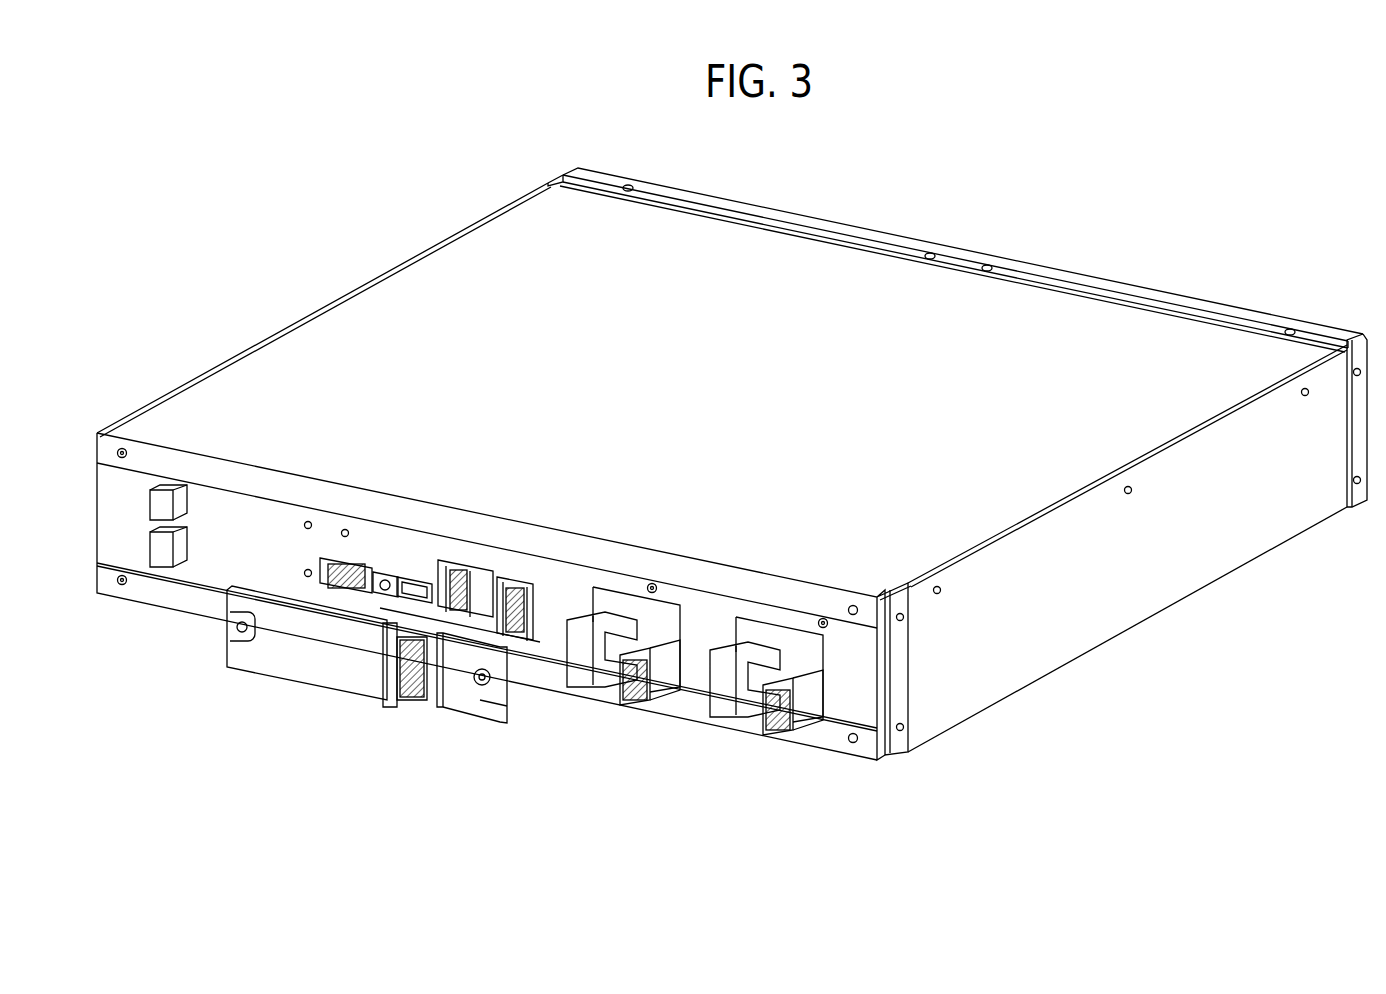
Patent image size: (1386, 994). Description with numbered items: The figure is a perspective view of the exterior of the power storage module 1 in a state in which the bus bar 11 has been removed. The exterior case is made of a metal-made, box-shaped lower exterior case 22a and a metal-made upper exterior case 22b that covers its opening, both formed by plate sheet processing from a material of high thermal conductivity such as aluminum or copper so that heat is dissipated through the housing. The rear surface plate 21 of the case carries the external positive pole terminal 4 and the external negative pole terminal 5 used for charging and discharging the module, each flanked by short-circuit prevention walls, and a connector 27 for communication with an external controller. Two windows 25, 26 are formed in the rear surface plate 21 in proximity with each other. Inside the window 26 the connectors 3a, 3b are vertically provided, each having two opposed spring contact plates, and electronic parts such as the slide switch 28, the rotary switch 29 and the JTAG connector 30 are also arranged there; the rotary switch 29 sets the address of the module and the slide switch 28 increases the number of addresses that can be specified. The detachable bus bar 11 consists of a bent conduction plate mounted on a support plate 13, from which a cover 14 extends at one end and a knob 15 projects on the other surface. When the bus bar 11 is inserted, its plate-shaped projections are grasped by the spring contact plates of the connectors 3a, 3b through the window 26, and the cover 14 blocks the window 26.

The power storage module 1 is at (813, 215).
The lower exterior case 22a is at (1063, 627).
The upper exterior case 22b is at (1085, 347).
The connector 27 is at (165, 512).
The rear surface plate 21 is at (207, 577).
The bus bar 11 is at (304, 670).
The cover 14 is at (260, 663).
The window 26 is at (312, 578).
The JTAG connector 30 is at (340, 568).
The rotary switch 29 is at (384, 578).
The slide switch 28 is at (420, 583).
The connector 3a is at (457, 571).
The connector 3b is at (512, 588).
The window 25 is at (519, 640).
The knob 15 is at (389, 703).
The support plate 13 is at (455, 708).
The external positive pole terminal 4 is at (615, 672).
The external negative pole terminal 5 is at (759, 697).